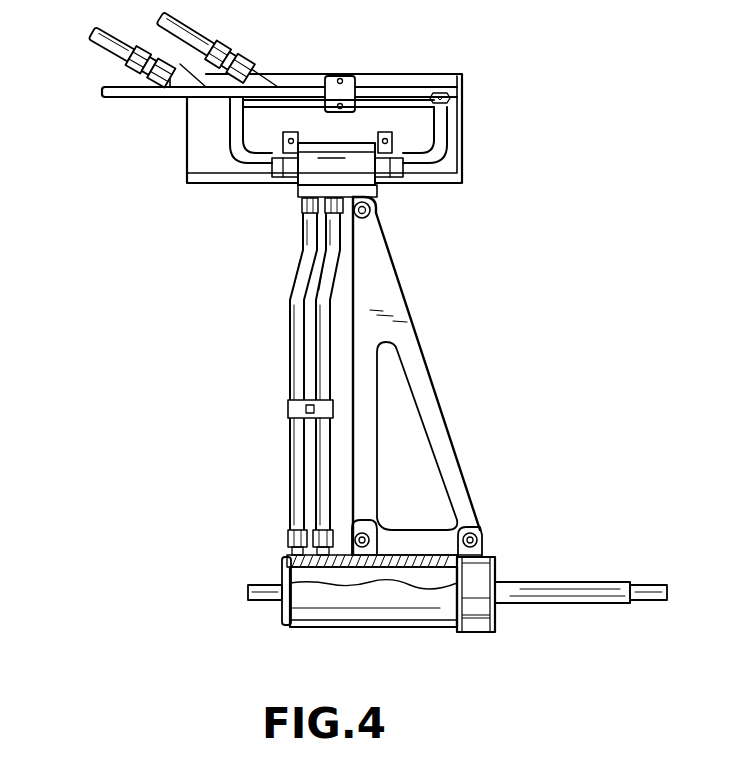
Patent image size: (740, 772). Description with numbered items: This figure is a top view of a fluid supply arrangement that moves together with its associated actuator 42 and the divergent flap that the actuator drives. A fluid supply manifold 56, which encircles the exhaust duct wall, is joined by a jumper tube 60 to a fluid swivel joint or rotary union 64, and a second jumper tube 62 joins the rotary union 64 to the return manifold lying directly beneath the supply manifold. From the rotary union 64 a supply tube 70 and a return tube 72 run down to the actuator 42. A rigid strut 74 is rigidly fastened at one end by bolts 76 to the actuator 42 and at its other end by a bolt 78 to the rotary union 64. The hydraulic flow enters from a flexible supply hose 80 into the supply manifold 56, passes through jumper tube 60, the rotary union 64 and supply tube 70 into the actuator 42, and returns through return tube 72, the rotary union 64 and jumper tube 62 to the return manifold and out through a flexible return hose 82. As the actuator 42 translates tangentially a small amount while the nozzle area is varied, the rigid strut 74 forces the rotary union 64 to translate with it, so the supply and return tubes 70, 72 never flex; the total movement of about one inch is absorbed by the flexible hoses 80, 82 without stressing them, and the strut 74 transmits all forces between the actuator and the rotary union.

The actuator 42 is at (390, 624).
The fluid supply manifold 56 is at (124, 98).
The jumper tube 60 is at (458, 124).
The jumper tube 62 is at (231, 136).
The rotary union 64 is at (350, 150).
The supply tube 70 is at (289, 343).
The return tube 72 is at (318, 460).
The rigid strut 74 is at (430, 408).
The bolts 76 is at (452, 526).
The bolt 78 is at (370, 212).
The flexible supply hose 80 is at (101, 36).
The flexible return hose 82 is at (197, 36).